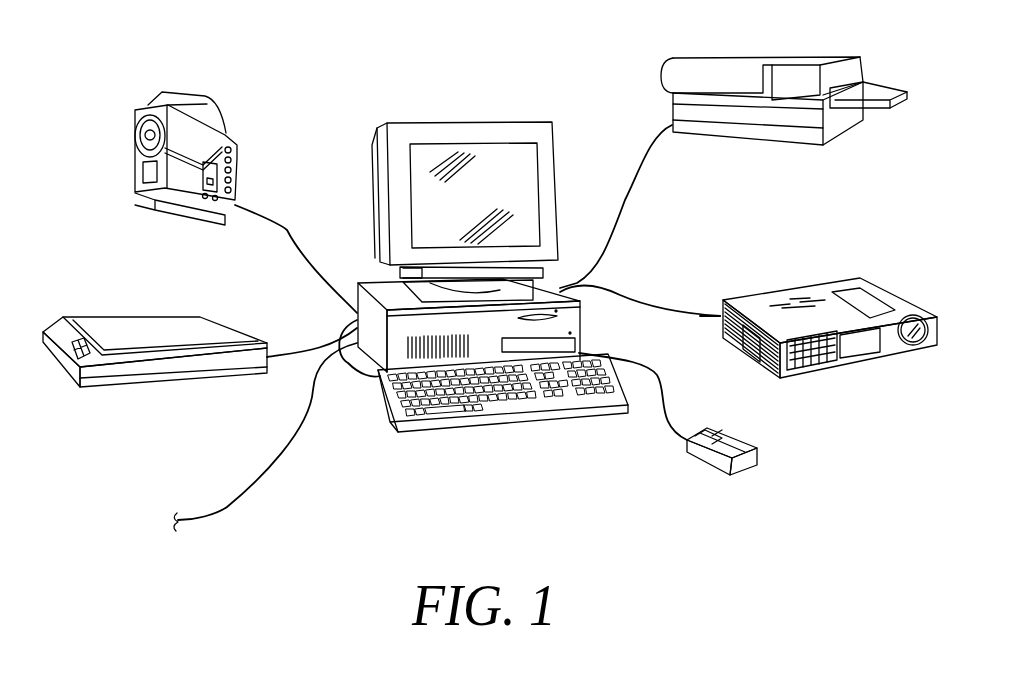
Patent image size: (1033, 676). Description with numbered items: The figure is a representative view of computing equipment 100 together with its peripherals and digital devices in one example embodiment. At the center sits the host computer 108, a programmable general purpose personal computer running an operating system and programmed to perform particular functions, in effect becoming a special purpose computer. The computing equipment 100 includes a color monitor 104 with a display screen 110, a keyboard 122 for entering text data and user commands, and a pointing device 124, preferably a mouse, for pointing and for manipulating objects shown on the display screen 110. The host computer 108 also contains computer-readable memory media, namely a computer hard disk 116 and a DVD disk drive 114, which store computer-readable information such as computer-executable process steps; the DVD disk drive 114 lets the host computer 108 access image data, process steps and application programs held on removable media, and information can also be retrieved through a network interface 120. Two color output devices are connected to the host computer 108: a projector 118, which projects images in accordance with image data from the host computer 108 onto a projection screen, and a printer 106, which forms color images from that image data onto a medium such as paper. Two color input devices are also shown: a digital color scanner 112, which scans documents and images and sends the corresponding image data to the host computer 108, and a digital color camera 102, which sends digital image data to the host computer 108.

The computing equipment 100 is at (537, 99).
The digital color camera 102 is at (236, 145).
The color monitor 104 is at (471, 122).
The printer 106 is at (711, 51).
The host computer 108 is at (368, 282).
The display screen 110 is at (522, 198).
The digital color scanner 112 is at (185, 383).
The DVD disk drive 114 is at (560, 317).
The computer hard disk 116 is at (575, 341).
The projector 118 is at (779, 272).
The network interface 120 is at (265, 440).
The keyboard 122 is at (453, 415).
The pointing device 124 is at (742, 461).